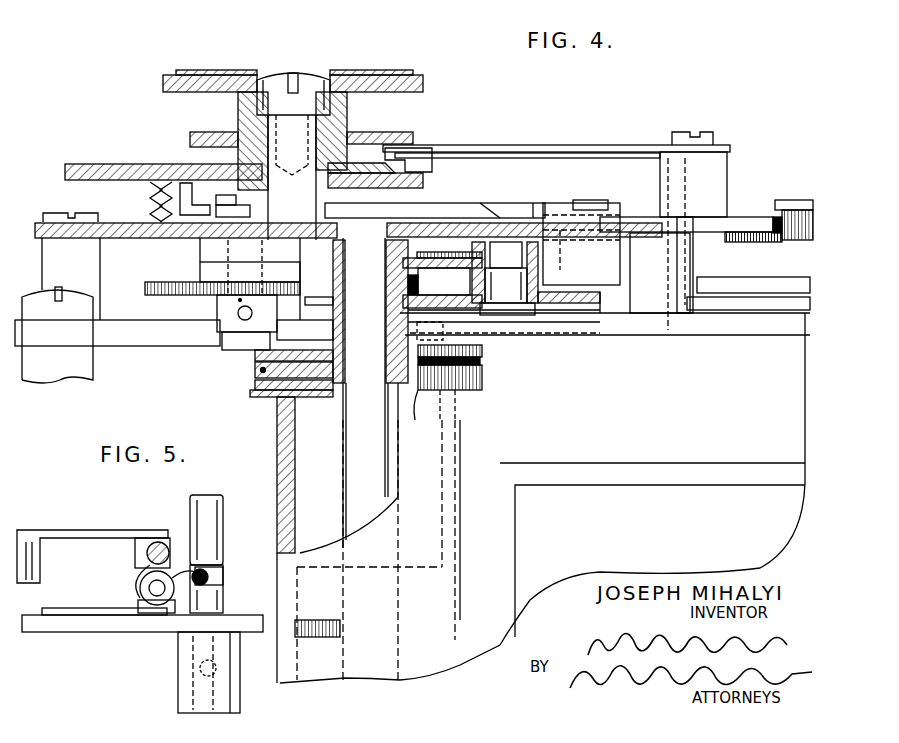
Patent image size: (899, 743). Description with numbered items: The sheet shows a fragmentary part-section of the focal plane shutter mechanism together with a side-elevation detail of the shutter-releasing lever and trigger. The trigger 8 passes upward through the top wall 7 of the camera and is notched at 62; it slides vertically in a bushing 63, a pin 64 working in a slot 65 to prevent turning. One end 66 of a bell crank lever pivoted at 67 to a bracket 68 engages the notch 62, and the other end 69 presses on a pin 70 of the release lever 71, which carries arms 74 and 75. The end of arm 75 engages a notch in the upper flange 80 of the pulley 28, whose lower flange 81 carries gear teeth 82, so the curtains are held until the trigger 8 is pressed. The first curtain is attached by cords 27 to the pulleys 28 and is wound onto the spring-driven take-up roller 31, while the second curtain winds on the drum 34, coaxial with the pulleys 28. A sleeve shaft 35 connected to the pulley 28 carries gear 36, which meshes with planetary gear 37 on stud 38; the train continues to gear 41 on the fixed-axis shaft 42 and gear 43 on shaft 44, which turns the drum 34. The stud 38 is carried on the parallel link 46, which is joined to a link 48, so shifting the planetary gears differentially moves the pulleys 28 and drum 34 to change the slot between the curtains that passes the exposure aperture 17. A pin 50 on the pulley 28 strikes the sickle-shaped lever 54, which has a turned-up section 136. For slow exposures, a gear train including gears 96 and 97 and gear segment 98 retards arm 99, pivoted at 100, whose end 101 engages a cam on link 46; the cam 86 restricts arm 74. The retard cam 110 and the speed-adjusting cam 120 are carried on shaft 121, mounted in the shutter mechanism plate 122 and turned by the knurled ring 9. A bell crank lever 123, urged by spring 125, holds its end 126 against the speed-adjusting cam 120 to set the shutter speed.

In FIG. 4, the top wall 7 is at (138, 335).
In FIG. 5, the trigger 8 is at (223, 512).
In FIG. 4, the shutter-setting knob 9 is at (423, 80).
In FIG. 4, the exposure frame 17 is at (693, 485).
In FIG. 4, the tapes or cords 27 is at (482, 378).
In FIG. 4, the pulleys 28 is at (480, 362).
In FIG. 4, the spring-driven take-up roller 31 is at (460, 470).
In FIG. 4, the drum 34 is at (277, 458).
In FIG. 4, the sleeve shaft 35 is at (333, 325).
In FIG. 4, the gear 36 is at (305, 303).
In FIG. 4, the planetary gear 37 is at (600, 312).
In FIG. 4, the stud 38 is at (505, 278).
In FIG. 4, the gear 41 is at (165, 282).
In FIG. 4, the fixed-axis shaft 42 is at (262, 370).
In FIG. 4, the gear 43 is at (442, 251).
In FIG. 4, the shaft 44 is at (349, 395).
In FIG. 4, the parallel link 46 is at (501, 288).
In FIG. 4, the link 48 is at (470, 250).
In FIG. 4, the pin 50 is at (482, 348).
In FIG. 4, the sickle-shaped lever 54 is at (533, 205).
In FIG. 5, the notch 62 is at (223, 578).
In FIG. 5, the bushing 63 is at (178, 645).
In FIG. 5, the pin 64 is at (200, 668).
In FIG. 5, the slot 65 is at (205, 683).
In FIG. 5, the bell crank lever end 66 is at (208, 573).
In FIG. 5, the pivot 67 is at (150, 588).
In FIG. 5, the bracket 68 is at (138, 605).
In FIG. 5, the bell crank arm 69 is at (133, 556).
In FIG. 5, the pin 70 is at (170, 540).
In FIG. 4, the release lever 71 is at (590, 155).
In FIG. 5, the release lever 71 is at (85, 532).
In FIG. 4, the arm 74 is at (520, 160).
In FIG. 4, the arm 75 is at (560, 330).
In FIG. 4, the upper flange 80 is at (255, 355).
In FIG. 4, the lower flange 81 is at (265, 395).
In FIG. 4, the gear teeth 82 is at (255, 385).
In FIG. 4, the cam 86 is at (205, 132).
In FIG. 4, the gear 96 is at (760, 243).
In FIG. 4, the gear 97 is at (790, 200).
In FIG. 4, the gear segment 98 is at (776, 216).
In FIG. 4, the arm 99 is at (585, 152).
In FIG. 4, the pivot 100 is at (697, 132).
In FIG. 4, the end pin 101 is at (420, 162).
In FIG. 4, the retard cam 110 is at (68, 164).
In FIG. 4, the speed-adjusting cam 120 is at (423, 180).
In FIG. 4, the shaft 121 is at (300, 118).
In FIG. 4, the shutter mechanism plate 122 is at (40, 215).
In FIG. 4, the bell crank lever 123 is at (193, 185).
In FIG. 4, the spring 125 is at (148, 194).
In FIG. 4, the lever end 126 is at (234, 201).
In FIG. 4, the turned-up section 136 is at (581, 242).